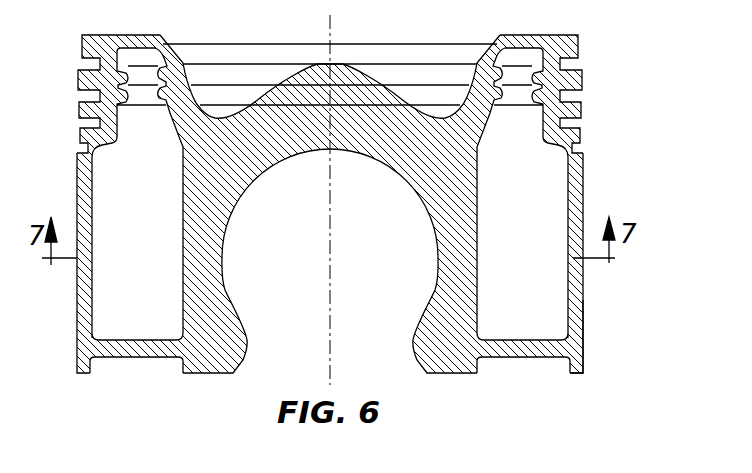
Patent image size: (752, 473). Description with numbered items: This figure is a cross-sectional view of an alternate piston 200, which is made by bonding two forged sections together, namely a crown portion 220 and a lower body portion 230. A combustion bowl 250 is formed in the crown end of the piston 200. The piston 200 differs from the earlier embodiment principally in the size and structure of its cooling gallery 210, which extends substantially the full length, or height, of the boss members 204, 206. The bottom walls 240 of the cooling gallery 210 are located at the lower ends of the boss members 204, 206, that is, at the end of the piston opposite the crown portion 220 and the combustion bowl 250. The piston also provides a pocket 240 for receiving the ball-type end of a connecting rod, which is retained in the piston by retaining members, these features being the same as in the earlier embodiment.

The piston 200 is at (376, 236).
The boss member 204 is at (82, 312).
The boss member 206 is at (577, 313).
The cooling gallery 210 is at (550, 198).
The crown portion 220 is at (579, 49).
The lower body portion 230 is at (575, 220).
The pocket 240 is at (233, 205).
The combustion bowl 250 is at (363, 78).